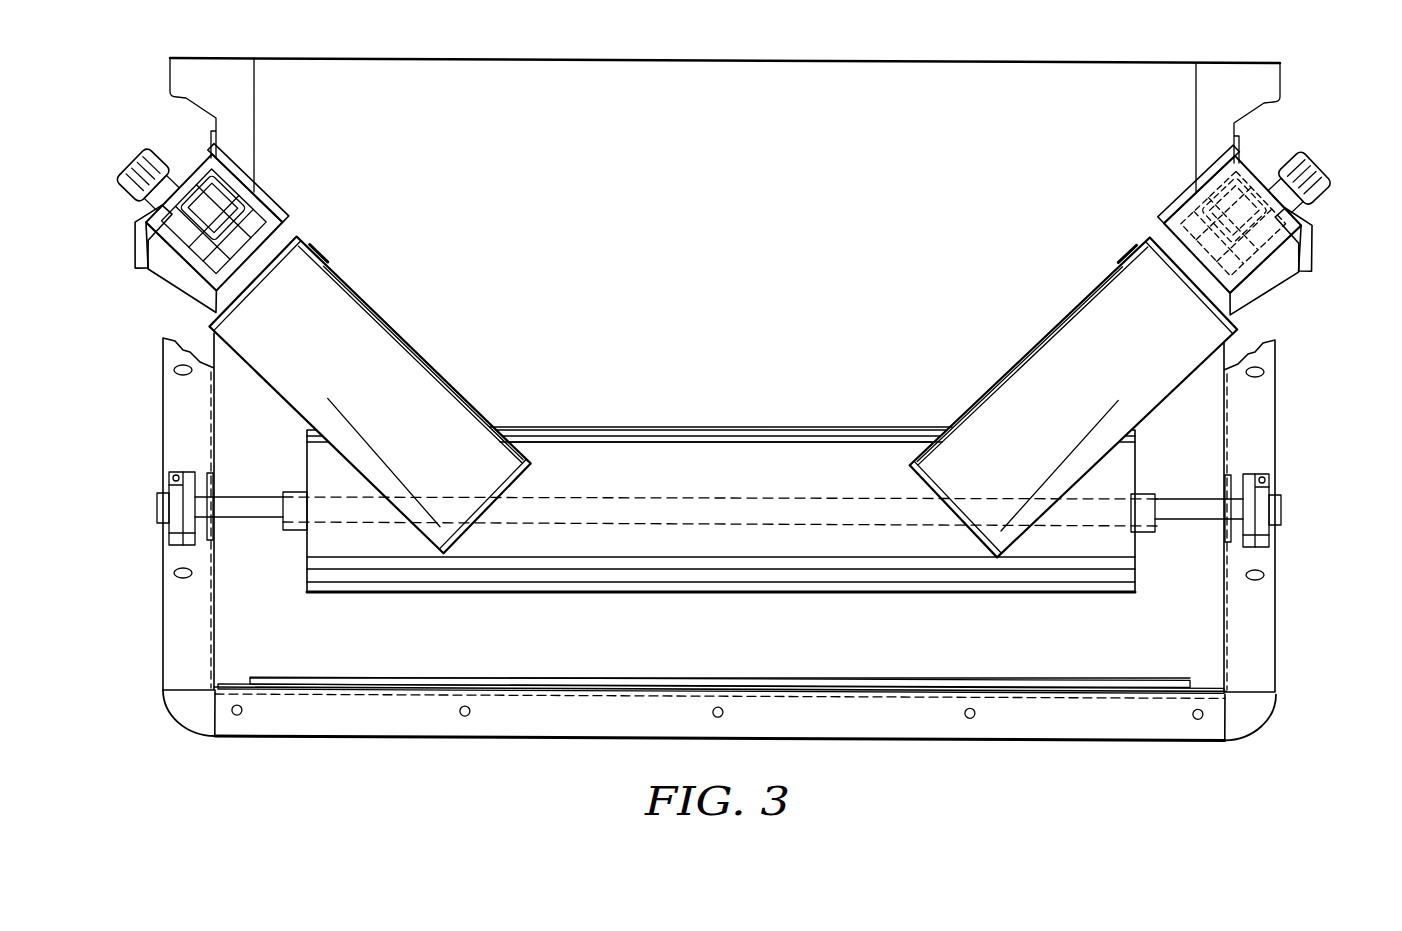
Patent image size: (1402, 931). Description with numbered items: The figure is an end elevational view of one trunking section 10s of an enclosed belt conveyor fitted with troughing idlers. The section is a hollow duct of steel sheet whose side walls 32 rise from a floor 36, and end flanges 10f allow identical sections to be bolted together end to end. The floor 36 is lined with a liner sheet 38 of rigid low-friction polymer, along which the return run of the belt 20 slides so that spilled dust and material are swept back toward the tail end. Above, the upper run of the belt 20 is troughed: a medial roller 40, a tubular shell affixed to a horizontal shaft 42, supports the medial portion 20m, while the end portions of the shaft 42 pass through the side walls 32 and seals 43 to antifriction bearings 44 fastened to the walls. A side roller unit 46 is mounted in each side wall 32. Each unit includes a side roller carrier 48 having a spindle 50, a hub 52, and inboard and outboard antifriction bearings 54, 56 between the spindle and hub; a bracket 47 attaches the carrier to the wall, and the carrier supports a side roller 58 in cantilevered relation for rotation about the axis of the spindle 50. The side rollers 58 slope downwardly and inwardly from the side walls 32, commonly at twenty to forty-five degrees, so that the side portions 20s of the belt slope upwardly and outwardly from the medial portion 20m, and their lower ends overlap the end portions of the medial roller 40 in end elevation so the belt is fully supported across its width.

The trunking section 10s is at (133, 65).
The end flange 10f is at (165, 384).
The belt 20 is at (762, 410).
The medial portion of the belt 20m is at (662, 427).
The side portion of the belt 20s is at (408, 326).
The side wall 32 is at (196, 617).
The floor 36 is at (373, 689).
The liner sheet 38 is at (528, 682).
The medial roller 40 is at (736, 483).
The horizontal shaft 42 is at (323, 518).
The seal 43 is at (207, 547).
The antifriction bearing 44 is at (168, 487).
The side roller unit 46 is at (110, 154).
The mounting bracket plate 47 is at (133, 233).
The side roller carrier 48 is at (170, 266).
The spindle 50 is at (147, 153).
The hub 52 is at (250, 200).
The inboard antifriction bearing 54 is at (280, 218).
The outboard antifriction bearing 56 is at (228, 181).
The side roller 58 is at (388, 399).